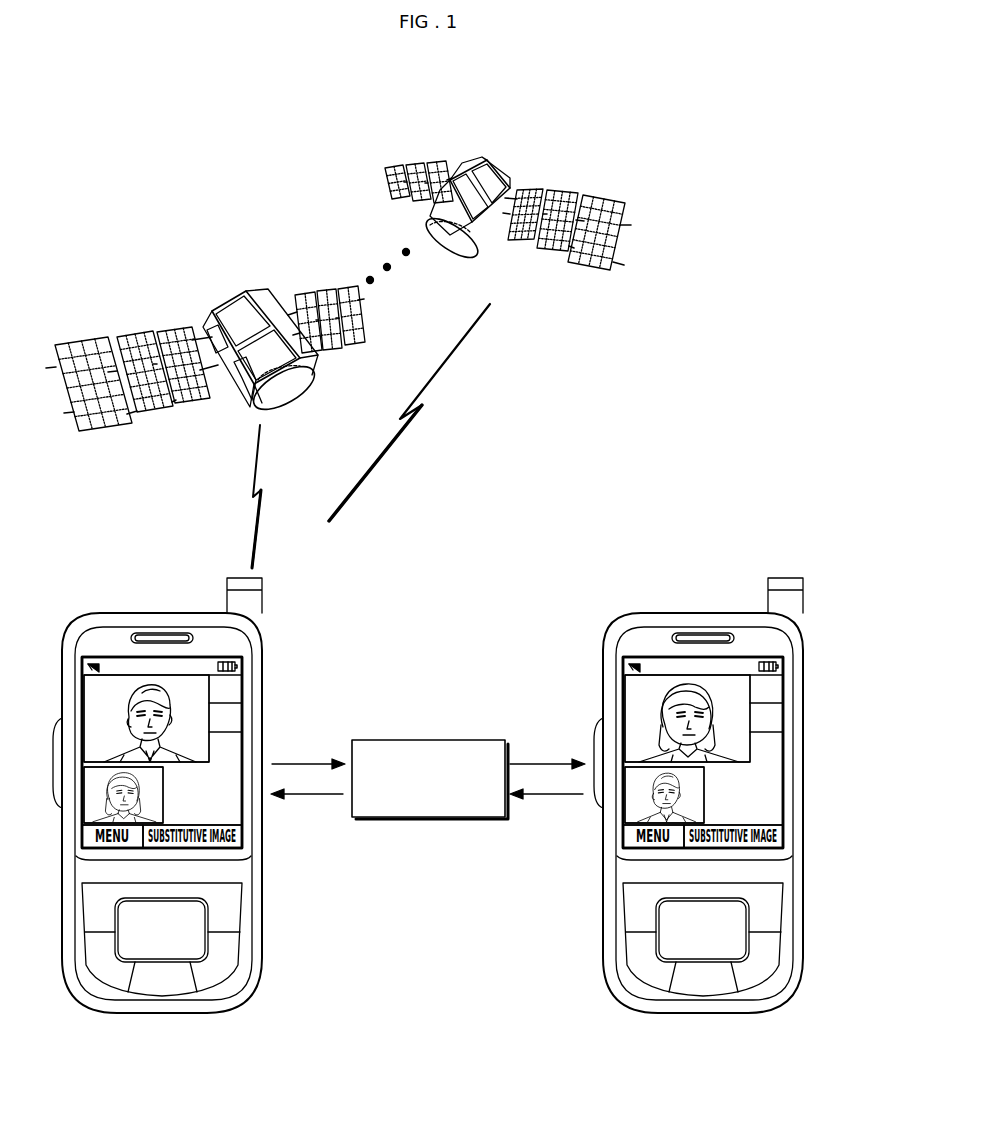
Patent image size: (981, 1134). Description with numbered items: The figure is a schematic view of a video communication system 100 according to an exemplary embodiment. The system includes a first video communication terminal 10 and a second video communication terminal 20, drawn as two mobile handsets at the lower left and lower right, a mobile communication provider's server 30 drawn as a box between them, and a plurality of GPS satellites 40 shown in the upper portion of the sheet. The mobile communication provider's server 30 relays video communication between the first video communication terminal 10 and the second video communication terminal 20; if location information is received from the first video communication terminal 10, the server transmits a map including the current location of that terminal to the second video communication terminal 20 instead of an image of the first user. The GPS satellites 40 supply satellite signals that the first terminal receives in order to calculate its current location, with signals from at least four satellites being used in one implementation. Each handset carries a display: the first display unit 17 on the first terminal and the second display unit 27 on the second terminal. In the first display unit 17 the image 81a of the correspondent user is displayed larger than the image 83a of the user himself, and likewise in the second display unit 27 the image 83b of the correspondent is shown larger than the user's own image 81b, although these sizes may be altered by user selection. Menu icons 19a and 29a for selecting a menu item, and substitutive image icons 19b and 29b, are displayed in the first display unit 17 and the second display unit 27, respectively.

The video communication system 100 is at (731, 179).
The Global Positioning System (GPS) satellites 40 is at (386, 176).
The first video communication terminal 10 is at (160, 612).
The second video communication terminal 20 is at (701, 612).
The mobile communication provider's server 30 is at (466, 740).
The first display unit 17 is at (243, 690).
The second display unit 27 is at (623, 690).
The image of correspondent user 81a is at (200, 723).
The image of user himself 83a is at (158, 792).
The image of correspondent user 83b is at (635, 723).
The image of user himself 81b is at (635, 813).
The menu icon 19a is at (135, 843).
The substitutive image icon 19b is at (237, 843).
The menu icon 29a is at (635, 843).
The substitutive image icon 29b is at (705, 843).